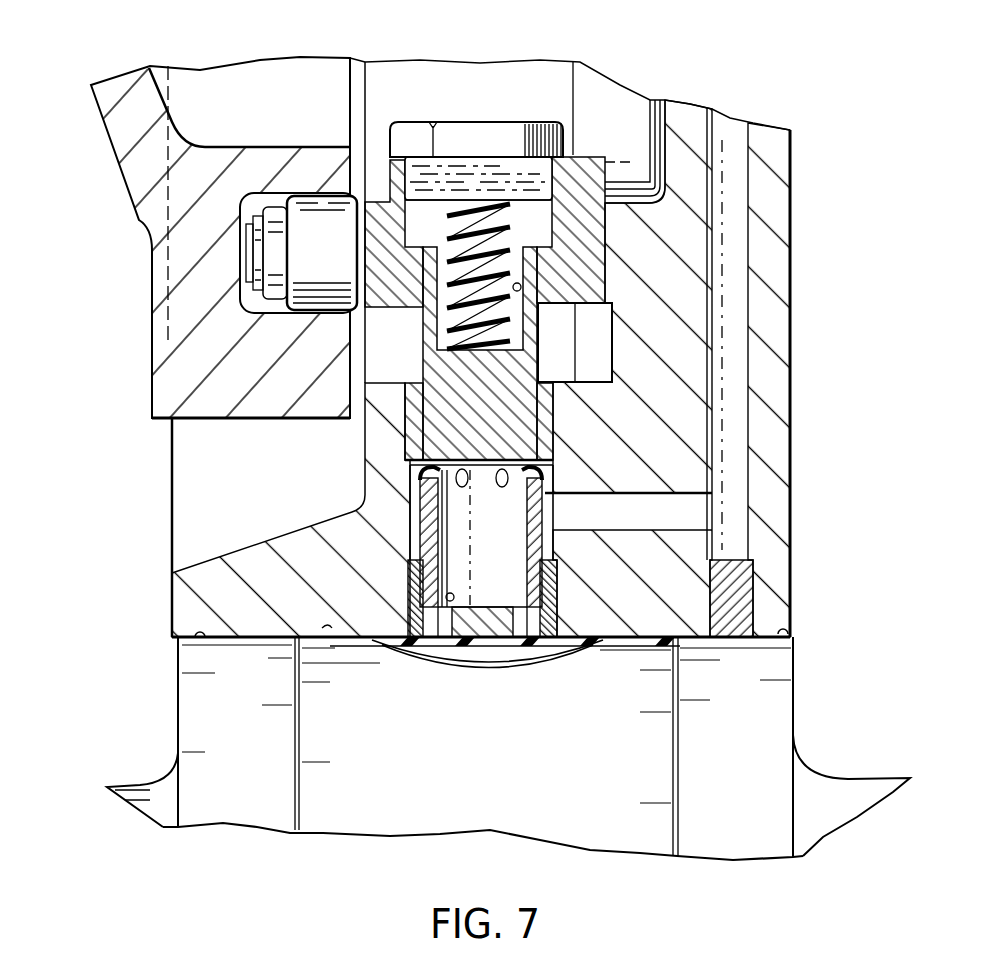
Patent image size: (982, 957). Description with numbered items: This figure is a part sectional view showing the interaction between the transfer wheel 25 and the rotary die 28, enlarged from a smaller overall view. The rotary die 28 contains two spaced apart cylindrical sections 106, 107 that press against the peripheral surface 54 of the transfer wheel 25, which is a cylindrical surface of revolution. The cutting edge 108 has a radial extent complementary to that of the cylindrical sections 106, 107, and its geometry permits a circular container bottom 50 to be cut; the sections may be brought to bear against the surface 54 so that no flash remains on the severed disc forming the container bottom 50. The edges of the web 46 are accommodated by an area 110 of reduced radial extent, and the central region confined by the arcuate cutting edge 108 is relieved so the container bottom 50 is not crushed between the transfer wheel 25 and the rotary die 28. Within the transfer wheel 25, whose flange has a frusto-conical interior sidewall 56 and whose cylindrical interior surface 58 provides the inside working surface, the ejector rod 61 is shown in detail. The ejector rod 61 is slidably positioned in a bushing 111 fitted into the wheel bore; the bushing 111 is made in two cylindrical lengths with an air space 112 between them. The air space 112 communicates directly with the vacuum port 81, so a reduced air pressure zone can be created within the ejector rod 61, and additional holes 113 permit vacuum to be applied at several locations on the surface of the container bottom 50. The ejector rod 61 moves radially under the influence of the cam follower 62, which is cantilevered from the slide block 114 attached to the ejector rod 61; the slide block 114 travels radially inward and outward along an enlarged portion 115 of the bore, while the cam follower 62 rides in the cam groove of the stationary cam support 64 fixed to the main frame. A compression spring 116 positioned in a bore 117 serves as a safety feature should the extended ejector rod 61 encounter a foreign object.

The transfer wheel 25 is at (793, 603).
The rotary die 28 is at (483, 799).
The web 46 is at (329, 625).
The container bottom 50 is at (452, 642).
The peripheral surface 54 is at (265, 640).
The interior sidewall 56 is at (448, 598).
The interior surface 58 is at (630, 203).
The ejector rod 61 is at (496, 574).
The cam follower 62 is at (334, 258).
The stationary cam support 64 is at (120, 163).
The vacuum port 81 is at (752, 383).
The cylindrical section 106 is at (190, 640).
The cylindrical section 107 is at (795, 634).
The cutting edge 108 is at (577, 633).
The area of reduced radial extent 110 is at (628, 643).
The bushing 111 is at (400, 433).
The air space 112 is at (410, 527).
The holes 113 is at (415, 582).
The slide block 114 is at (372, 200).
The enlarged portion 115 is at (614, 362).
The compression spring 116 is at (478, 203).
The bore 117 is at (521, 287).